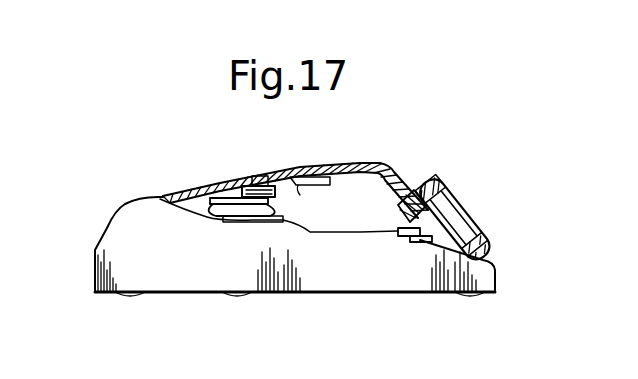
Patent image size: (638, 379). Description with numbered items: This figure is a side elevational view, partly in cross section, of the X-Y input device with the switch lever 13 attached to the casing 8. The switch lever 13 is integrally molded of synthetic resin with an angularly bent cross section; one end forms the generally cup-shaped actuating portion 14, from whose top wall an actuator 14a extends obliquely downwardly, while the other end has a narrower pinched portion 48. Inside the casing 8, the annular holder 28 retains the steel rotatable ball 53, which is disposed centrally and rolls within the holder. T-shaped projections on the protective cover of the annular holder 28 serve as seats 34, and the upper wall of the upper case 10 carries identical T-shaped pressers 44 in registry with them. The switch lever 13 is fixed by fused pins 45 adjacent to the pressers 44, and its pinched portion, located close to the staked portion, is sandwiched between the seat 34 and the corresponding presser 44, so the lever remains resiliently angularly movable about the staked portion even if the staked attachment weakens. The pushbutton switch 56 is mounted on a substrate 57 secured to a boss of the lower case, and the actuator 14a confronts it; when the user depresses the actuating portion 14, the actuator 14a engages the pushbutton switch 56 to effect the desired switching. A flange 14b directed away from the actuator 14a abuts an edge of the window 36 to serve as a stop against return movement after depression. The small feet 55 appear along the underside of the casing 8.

The casing 8 is at (105, 226).
The upper case 10 is at (181, 188).
The switch lever 13 is at (386, 163).
The actuating portion 14 is at (468, 214).
The actuator 14a is at (427, 189).
The flange 14b is at (486, 255).
The annular holder 28 is at (258, 222).
The seat 34 is at (243, 222).
The window 36 is at (403, 188).
The presser 44 is at (247, 190).
The fused pins 45 is at (302, 186).
The pinched portion 48 is at (256, 178).
The rotatable ball 53 is at (246, 298).
The foot 55 is at (137, 298).
The pushbutton switch 56 is at (403, 238).
The substrate 57 is at (420, 243).